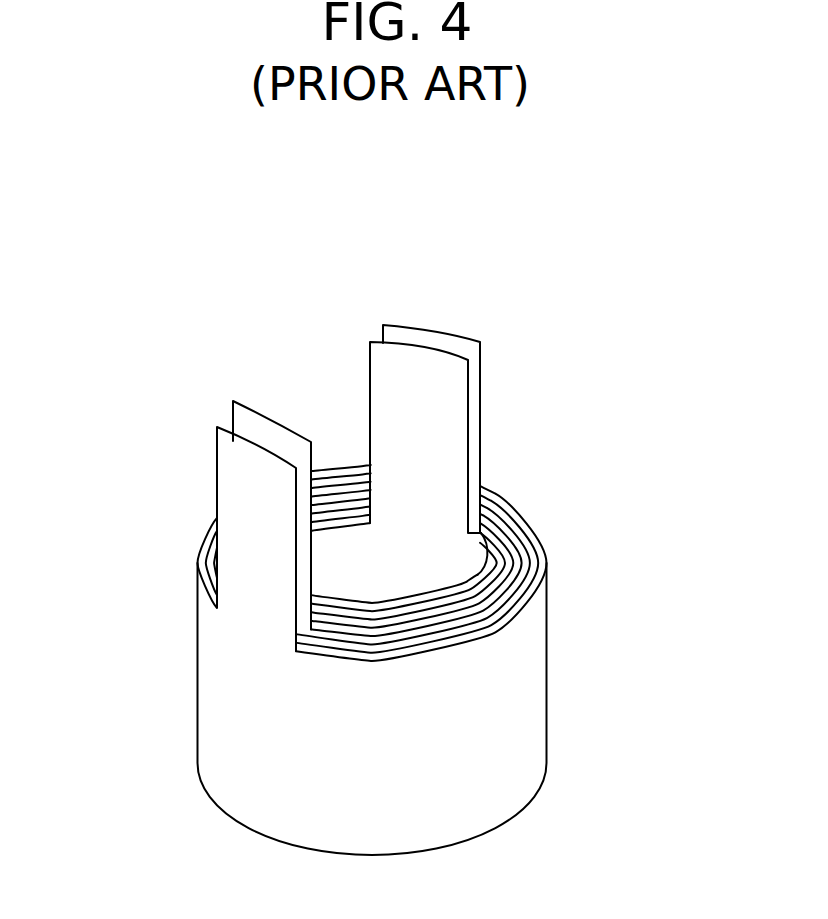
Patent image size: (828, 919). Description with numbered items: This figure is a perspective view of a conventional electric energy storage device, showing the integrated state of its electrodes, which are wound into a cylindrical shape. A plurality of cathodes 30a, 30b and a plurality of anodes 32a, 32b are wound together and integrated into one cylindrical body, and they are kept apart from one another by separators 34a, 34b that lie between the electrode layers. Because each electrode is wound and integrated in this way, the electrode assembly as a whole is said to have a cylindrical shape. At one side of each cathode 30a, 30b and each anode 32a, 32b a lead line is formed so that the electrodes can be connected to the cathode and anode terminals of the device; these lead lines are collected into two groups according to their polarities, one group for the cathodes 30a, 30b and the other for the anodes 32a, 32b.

The cathode 30a is at (223, 473).
The cathode 30b is at (271, 427).
The anode 32a is at (460, 333).
The anode 32b is at (420, 343).
The separator 34a is at (523, 605).
The separator 34b is at (498, 565).